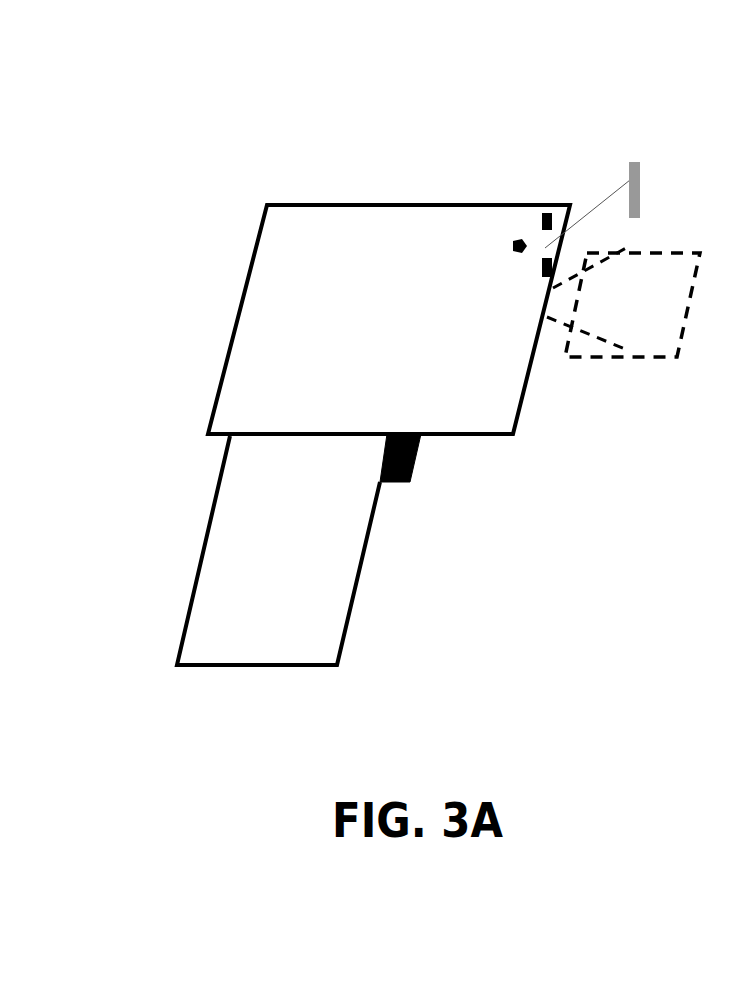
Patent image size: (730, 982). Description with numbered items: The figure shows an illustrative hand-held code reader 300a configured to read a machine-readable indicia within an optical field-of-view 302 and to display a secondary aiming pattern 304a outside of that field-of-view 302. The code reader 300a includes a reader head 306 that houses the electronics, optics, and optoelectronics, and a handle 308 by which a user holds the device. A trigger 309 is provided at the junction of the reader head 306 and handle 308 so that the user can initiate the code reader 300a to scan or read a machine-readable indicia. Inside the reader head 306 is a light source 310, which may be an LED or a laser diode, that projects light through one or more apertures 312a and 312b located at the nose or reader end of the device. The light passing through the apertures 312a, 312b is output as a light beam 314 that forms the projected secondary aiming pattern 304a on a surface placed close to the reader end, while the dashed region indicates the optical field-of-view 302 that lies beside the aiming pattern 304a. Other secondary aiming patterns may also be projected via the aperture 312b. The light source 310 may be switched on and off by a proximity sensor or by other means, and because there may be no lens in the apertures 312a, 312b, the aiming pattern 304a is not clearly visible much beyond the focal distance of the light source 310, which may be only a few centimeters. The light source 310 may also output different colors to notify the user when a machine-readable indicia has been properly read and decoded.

The hand-held code reader 300a is at (446, 55).
The optical field-of-view 302 is at (645, 337).
The secondary aiming pattern 304a is at (635, 163).
The reader head 306 is at (254, 247).
The handle 308 is at (200, 540).
The trigger 309 is at (413, 470).
The light source 310 is at (511, 246).
The aperture 312a is at (540, 212).
The aperture 312b is at (542, 270).
The light beam 314 is at (612, 187).